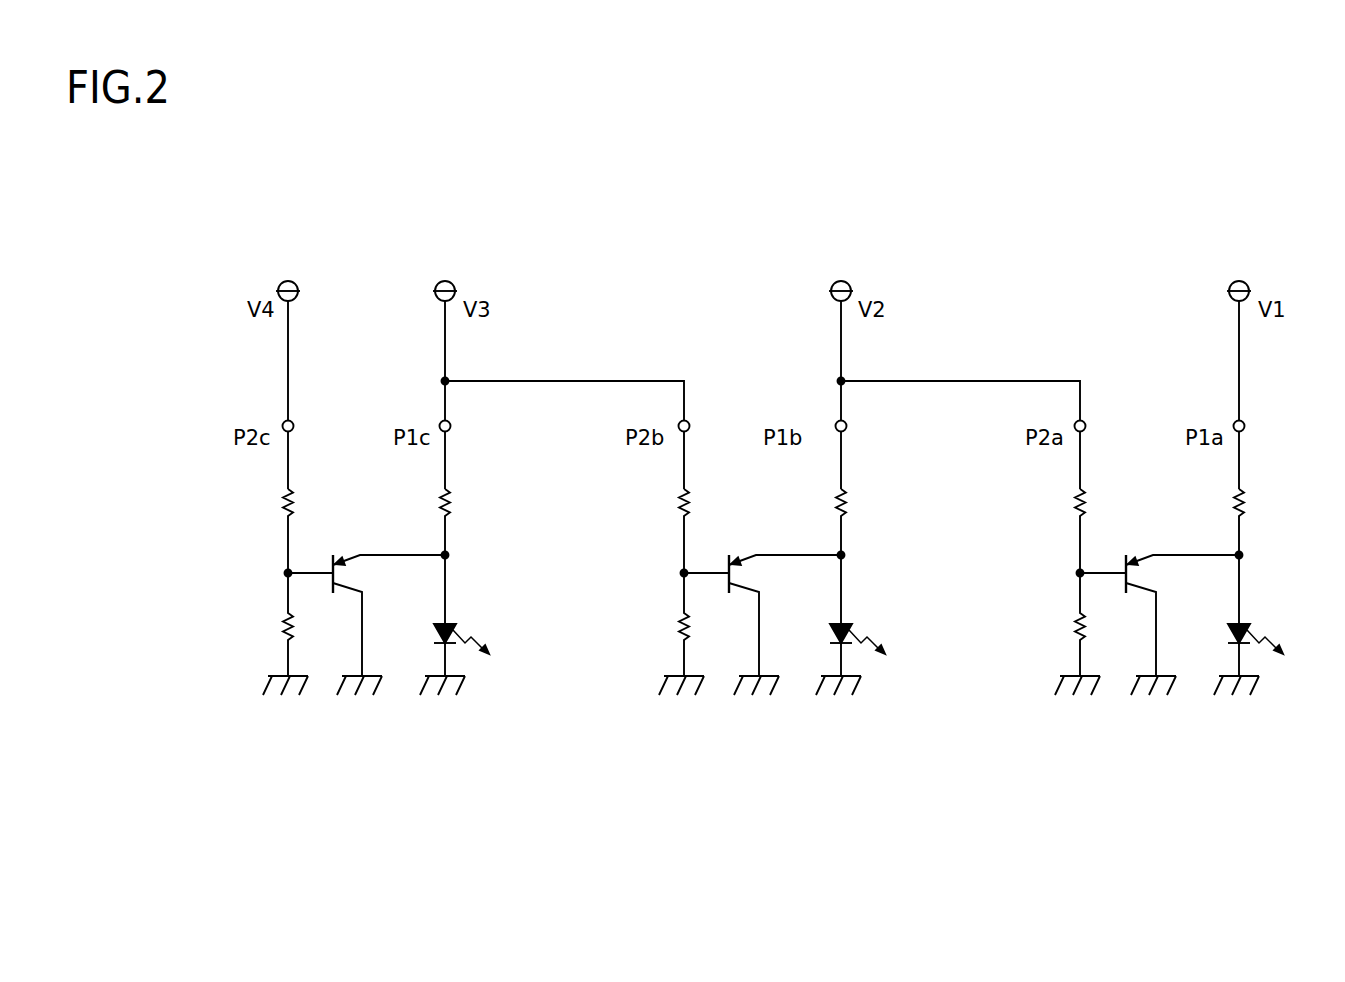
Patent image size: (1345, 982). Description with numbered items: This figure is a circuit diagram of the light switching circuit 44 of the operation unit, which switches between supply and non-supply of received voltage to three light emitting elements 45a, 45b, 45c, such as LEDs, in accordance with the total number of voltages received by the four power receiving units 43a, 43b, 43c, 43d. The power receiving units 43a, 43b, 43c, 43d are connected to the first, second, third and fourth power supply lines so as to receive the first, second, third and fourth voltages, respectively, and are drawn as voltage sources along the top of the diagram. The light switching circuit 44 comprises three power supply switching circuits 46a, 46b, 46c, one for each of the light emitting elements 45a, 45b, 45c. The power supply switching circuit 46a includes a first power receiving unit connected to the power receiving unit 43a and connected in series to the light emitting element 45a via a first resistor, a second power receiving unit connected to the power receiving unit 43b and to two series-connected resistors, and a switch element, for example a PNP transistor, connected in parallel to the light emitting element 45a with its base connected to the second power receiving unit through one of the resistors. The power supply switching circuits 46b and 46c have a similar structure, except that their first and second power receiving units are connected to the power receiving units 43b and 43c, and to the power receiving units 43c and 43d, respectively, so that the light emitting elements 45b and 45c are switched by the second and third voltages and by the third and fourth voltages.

The power receiving unit 43a is at (1246, 283).
The power receiving unit 43b is at (848, 283).
The power receiving unit 43c is at (452, 283).
The power receiving unit 43d is at (295, 283).
The light switching circuit 44 is at (765, 667).
The light emitting element 45a is at (1261, 632).
The light emitting element 45b is at (863, 632).
The light emitting element 45c is at (466, 632).
The power supply switching circuit 46a is at (1123, 720).
The power supply switching circuit 46b is at (734, 720).
The power supply switching circuit 46c is at (330, 720).